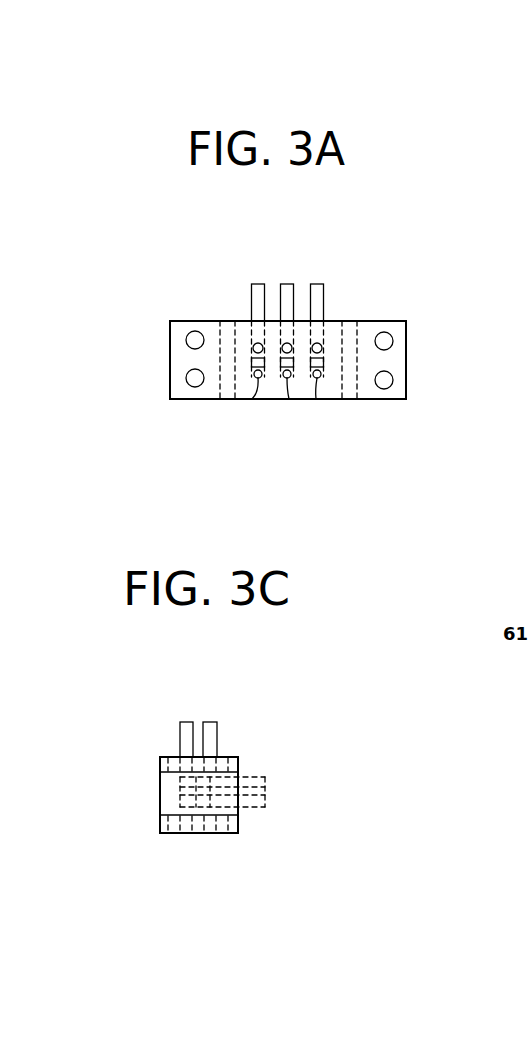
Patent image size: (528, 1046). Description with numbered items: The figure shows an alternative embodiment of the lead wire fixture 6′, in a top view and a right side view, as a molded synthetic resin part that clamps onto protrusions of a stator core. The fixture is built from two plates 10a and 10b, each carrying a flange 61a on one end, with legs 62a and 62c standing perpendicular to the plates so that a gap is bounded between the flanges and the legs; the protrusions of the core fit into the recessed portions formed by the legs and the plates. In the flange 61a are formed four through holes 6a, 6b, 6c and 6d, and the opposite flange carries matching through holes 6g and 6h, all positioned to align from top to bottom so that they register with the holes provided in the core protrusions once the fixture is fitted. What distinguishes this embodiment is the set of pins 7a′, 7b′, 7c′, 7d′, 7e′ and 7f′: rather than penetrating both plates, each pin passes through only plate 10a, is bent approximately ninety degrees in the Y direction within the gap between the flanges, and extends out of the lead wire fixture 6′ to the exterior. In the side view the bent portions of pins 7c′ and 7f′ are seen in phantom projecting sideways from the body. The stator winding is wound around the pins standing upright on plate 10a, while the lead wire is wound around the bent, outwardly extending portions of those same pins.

In FIG. 3A, the lead wire fixture 6′ is at (428, 251).
In FIG. 3A, the through hole 6a is at (195, 338).
In FIG. 3A, the through hole 6b is at (195, 378).
In FIG. 3A, the through hole 6c is at (384, 341).
In FIG. 3C, the through hole 6c is at (225, 757).
In FIG. 3A, the through hole 6d is at (384, 380).
In FIG. 3C, the through hole 6d is at (177, 755).
In FIG. 3C, the through hole 6g is at (220, 835).
In FIG. 3C, the through hole 6h is at (182, 835).
In FIG. 3A, the pin 7a′ is at (258, 284).
In FIG. 3A, the pin 7b′ is at (287, 284).
In FIG. 3A, the pin 7c′ is at (317, 284).
In FIG. 3C, the pin 7c′ is at (215, 722).
In FIG. 3A, the pin 7d′ is at (252, 399).
In FIG. 3A, the pin 7e′ is at (289, 399).
In FIG. 3A, the pin 7f′ is at (316, 399).
In FIG. 3C, the pin 7f′ is at (183, 722).
In FIG. 3A, the plate 10a is at (331, 327).
In FIG. 3C, the plate 10a is at (196, 765).
In FIG. 3C, the plate 10b is at (197, 835).
In FIG. 3A, the flange 61a is at (212, 333).
In FIG. 3A, the leg 62a is at (228, 401).
In FIG. 3A, the leg 62c is at (357, 399).
In FIG. 3C, the leg 62c is at (165, 797).